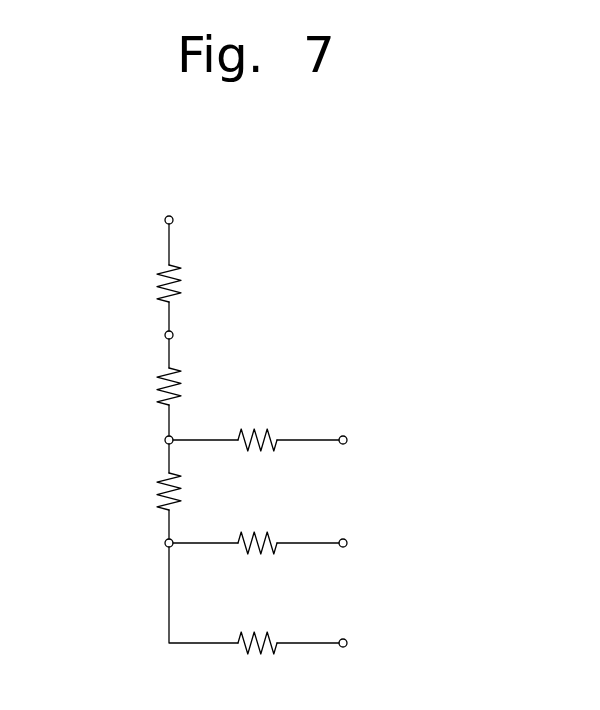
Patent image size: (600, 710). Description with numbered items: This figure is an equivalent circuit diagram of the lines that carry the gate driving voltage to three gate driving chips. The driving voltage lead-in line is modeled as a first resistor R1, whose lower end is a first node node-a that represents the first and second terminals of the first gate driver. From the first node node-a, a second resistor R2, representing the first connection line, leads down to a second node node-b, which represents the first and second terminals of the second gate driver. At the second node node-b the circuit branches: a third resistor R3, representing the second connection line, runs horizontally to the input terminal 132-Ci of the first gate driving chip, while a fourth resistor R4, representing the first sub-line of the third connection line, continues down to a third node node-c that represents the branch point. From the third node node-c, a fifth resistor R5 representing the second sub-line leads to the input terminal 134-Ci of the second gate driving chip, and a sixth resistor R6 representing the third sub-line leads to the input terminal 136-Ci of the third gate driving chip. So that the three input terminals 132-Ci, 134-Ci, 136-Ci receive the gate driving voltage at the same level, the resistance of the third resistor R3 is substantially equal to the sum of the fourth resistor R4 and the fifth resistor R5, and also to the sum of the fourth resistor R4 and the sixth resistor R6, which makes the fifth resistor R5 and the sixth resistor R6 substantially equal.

The input terminal of the first gate driving chip 132-Ci is at (347, 440).
The input terminal of the second gate driving chip 134-Ci is at (347, 543).
The input terminal of the third gate driving chip 136-Ci is at (347, 643).
The first resistor R1 is at (185, 283).
The second resistor R2 is at (185, 386).
The third resistor R3 is at (257, 425).
The fourth resistor R4 is at (185, 491).
The fifth resistor R5 is at (257, 528).
The sixth resistor R6 is at (257, 628).
The first node node-a is at (165, 335).
The second node node-b is at (165, 440).
The third node node-c is at (165, 543).